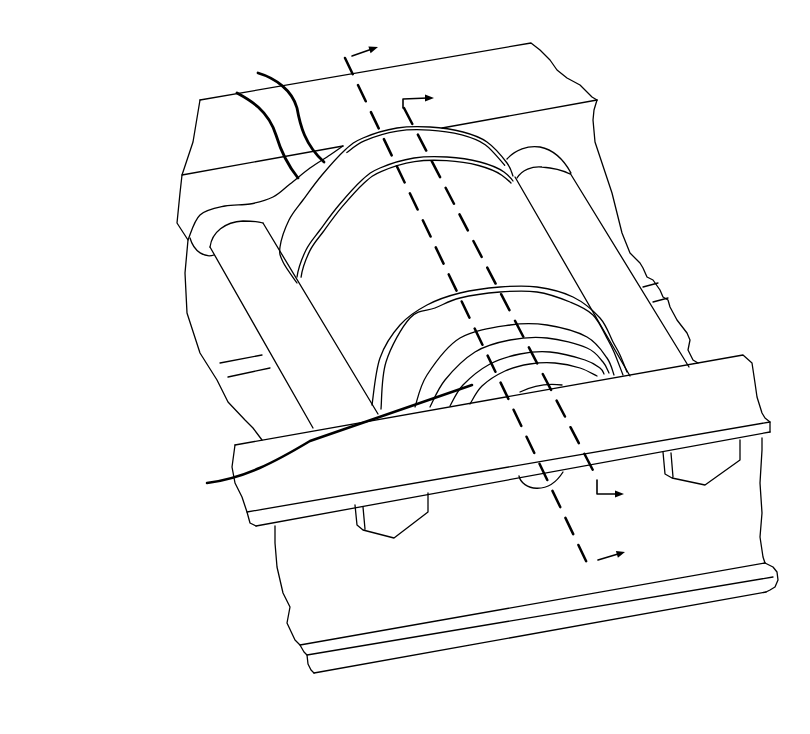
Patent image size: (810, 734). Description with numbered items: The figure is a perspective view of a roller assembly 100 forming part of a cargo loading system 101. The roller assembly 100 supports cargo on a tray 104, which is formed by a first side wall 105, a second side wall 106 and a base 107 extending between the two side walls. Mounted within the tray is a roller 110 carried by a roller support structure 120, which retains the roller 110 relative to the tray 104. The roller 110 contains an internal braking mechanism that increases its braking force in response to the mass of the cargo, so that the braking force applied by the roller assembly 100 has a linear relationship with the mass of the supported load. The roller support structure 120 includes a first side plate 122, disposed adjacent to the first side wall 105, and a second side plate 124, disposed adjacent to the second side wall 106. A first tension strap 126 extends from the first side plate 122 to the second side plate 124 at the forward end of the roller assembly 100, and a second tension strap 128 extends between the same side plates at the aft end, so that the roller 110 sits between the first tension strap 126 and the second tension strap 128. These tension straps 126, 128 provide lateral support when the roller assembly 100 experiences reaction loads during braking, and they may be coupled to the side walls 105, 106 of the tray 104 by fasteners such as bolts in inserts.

The roller assembly 100 is at (72, 145).
The cargo loading system 101 is at (222, 121).
The tray 104 is at (461, 96).
The first side wall 105 is at (203, 156).
The second side wall 106 is at (348, 473).
The base 107 is at (245, 413).
The roller 110 is at (348, 278).
The roller support structure 120 is at (280, 104).
The first side plate 122 is at (255, 122).
The second side plate 124 is at (322, 439).
The first tension strap 126 is at (282, 359).
The second tension strap 128 is at (593, 283).